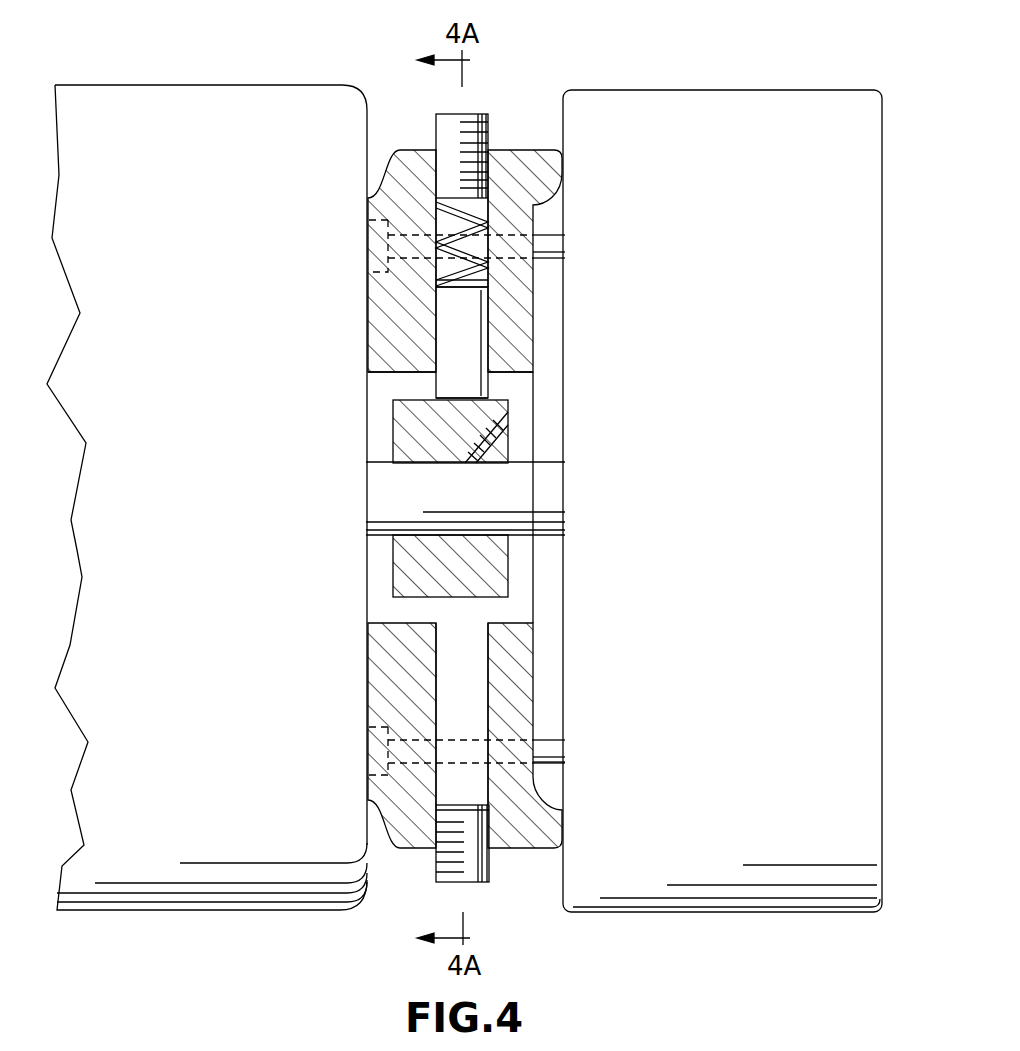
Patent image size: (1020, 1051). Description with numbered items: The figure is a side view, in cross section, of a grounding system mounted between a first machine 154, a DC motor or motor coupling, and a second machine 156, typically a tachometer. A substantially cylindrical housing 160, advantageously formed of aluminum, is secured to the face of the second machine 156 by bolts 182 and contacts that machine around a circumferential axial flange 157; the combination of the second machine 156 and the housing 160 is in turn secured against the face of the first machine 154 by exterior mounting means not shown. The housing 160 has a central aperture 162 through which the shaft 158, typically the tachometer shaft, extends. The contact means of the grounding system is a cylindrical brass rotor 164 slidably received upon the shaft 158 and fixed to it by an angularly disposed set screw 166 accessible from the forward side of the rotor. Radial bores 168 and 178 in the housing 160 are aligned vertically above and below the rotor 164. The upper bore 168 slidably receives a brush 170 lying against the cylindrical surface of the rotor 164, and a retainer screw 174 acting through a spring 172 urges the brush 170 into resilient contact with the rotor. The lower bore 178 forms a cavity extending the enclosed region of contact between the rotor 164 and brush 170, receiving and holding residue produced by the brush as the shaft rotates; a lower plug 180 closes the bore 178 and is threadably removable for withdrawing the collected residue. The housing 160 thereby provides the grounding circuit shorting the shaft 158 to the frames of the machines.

The first machine 154 is at (287, 85).
The second machine 156 is at (647, 90).
The circumferential axial flange 157 is at (563, 178).
The shaft 158 is at (382, 495).
The housing 160 is at (375, 296).
The central aperture 162 is at (380, 387).
The rotor 164 is at (388, 420).
The set screw 166 is at (510, 440).
The radial bore 168 is at (437, 339).
The brush 170 is at (475, 388).
The spring 172 is at (475, 214).
The retainer screw 174 is at (490, 128).
The lower bore 178 is at (437, 727).
The lower plug 180 is at (489, 875).
The bolts 182 is at (374, 785).